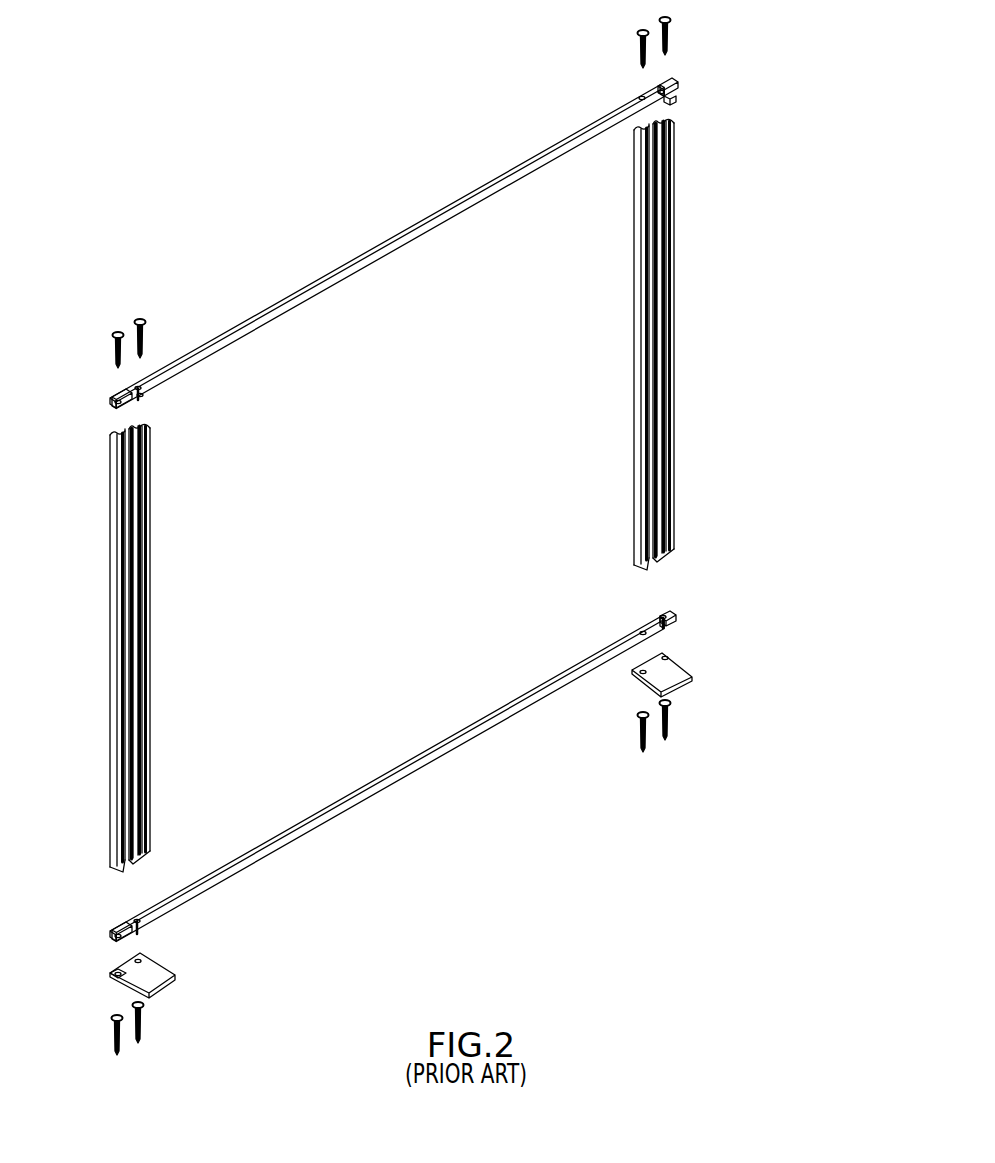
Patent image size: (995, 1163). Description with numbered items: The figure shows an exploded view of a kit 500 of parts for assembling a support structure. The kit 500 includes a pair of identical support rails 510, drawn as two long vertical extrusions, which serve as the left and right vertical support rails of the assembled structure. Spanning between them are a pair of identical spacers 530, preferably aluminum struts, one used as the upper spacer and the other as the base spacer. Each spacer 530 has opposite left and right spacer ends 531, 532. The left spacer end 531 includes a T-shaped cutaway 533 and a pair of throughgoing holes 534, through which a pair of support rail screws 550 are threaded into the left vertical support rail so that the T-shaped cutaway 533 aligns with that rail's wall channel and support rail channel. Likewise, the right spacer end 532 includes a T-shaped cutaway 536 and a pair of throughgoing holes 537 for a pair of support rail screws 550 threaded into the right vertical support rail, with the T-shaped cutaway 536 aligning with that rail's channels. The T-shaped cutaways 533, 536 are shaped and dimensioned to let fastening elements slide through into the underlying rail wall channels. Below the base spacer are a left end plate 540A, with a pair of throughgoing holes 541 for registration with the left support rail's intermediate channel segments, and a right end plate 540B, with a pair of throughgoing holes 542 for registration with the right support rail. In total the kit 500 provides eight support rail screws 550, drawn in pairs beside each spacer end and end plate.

The kit 500 is at (237, 177).
The support rails 510 is at (634, 345).
The spacers 530 is at (398, 247).
The left spacer end 531 is at (124, 397).
The right spacer end 532 is at (665, 80).
The T-shaped cutaway 533 is at (139, 401).
The throughgoing holes 534 is at (142, 398).
The T-shaped cutaway 536 is at (668, 99).
The throughgoing holes 537 is at (641, 97).
The left end plate 540A is at (160, 975).
The right end plate 540B is at (670, 678).
The throughgoing holes 541 is at (116, 977).
The throughgoing holes 542 is at (640, 673).
The support rail screws 550 is at (660, 20).